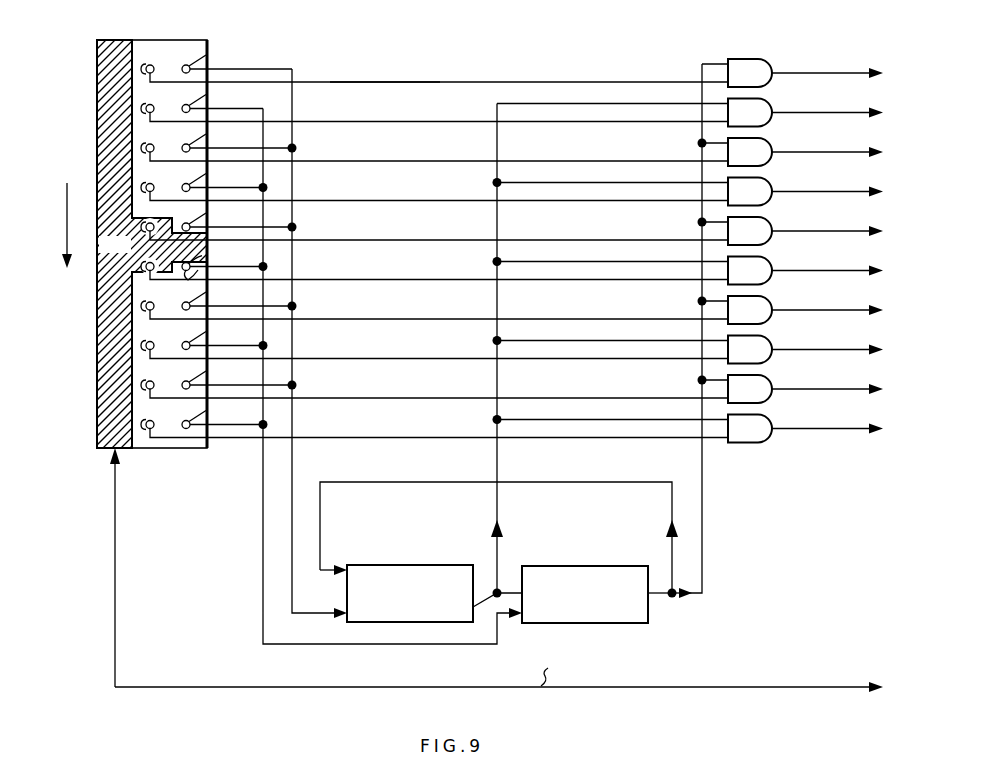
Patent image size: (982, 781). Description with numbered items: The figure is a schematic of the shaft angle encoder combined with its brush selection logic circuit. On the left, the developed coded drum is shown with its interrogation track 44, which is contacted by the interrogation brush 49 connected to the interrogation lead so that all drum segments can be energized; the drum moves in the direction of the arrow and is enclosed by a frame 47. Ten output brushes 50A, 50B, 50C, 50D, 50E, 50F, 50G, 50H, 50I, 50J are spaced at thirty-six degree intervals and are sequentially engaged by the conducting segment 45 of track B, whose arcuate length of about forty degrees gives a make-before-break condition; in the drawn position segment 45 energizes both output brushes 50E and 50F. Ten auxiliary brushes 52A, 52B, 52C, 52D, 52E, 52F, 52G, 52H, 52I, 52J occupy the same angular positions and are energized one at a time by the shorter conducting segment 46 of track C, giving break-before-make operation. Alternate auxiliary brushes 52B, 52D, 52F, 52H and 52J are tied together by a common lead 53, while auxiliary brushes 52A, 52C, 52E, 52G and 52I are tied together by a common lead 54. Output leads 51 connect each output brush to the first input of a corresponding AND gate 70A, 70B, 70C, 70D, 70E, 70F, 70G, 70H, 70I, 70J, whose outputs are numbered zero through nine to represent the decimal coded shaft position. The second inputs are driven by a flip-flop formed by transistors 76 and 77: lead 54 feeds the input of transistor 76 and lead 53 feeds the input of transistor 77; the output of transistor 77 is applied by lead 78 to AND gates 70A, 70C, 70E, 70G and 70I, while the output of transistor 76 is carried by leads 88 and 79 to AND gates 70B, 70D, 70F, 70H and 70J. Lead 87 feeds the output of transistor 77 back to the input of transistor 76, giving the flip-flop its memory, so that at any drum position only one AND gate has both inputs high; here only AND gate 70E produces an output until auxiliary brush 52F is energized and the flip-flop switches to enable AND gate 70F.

The interrogation track 44 is at (113, 22).
The conducting segment 45 is at (140, 233).
The conducting segment 46 is at (192, 274).
The switch housing frame 47 is at (188, 22).
The interrogation brush 49 is at (111, 452).
The output brush 50A is at (434, 63).
The output brush 50B is at (434, 102).
The output brush 50C is at (434, 142).
The output brush 50D is at (434, 181).
The output brush 50E is at (434, 221).
The output brush 50F is at (434, 261).
The output brush 50G is at (434, 300).
The output brush 50H is at (434, 339).
The output brush 50I is at (434, 379).
The output brush 50J is at (434, 418).
The output leads 51 is at (367, 159).
The auxiliary brush 52A is at (207, 54).
The auxiliary brush 52B is at (207, 93).
The auxiliary brush 52C is at (207, 133).
The auxiliary brush 52D is at (207, 172).
The auxiliary brush 52E is at (207, 212).
The auxiliary brush 52F is at (207, 251).
The auxiliary brush 52G is at (207, 291).
The auxiliary brush 52H is at (207, 330).
The auxiliary brush 52I is at (207, 370).
The auxiliary brush 52J is at (207, 409).
The common lead 53 is at (262, 501).
The common lead 54 is at (295, 475).
The AND gate 70A is at (776, 54).
The AND gate 70B is at (776, 94).
The AND gate 70C is at (776, 133).
The AND gate 70D is at (776, 172).
The AND gate 70E is at (776, 212).
The AND gate 70F is at (776, 252).
The AND gate 70G is at (776, 291).
The AND gate 70H is at (776, 330).
The AND gate 70I is at (776, 370).
The AND gate 70J is at (776, 410).
The transistor 76 is at (420, 563).
The transistor 77 is at (592, 563).
The lead 78 is at (674, 519).
The lead 79 is at (496, 472).
The lead 87 is at (582, 482).
The lead 88 is at (488, 594).